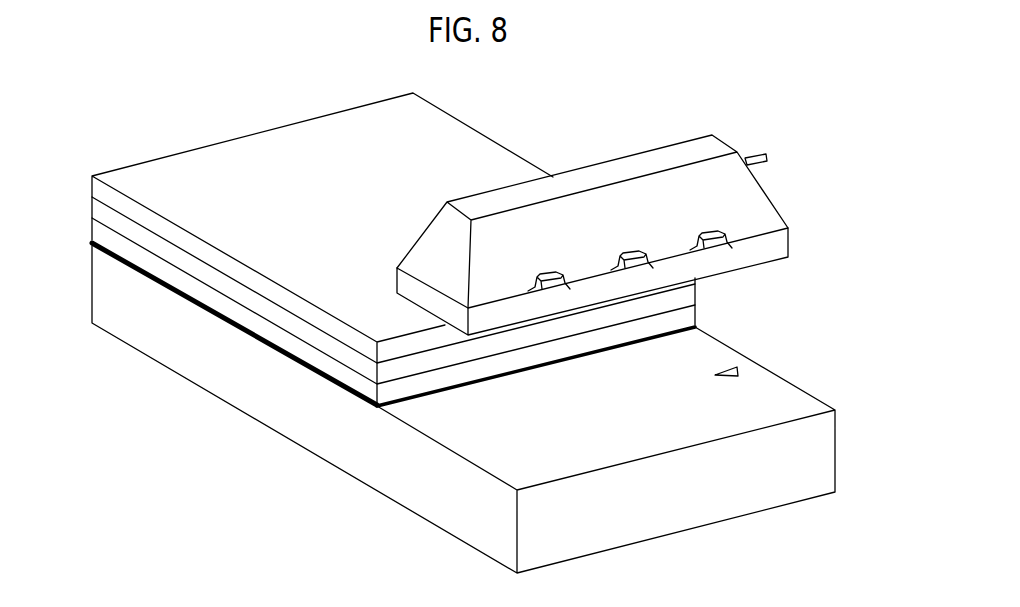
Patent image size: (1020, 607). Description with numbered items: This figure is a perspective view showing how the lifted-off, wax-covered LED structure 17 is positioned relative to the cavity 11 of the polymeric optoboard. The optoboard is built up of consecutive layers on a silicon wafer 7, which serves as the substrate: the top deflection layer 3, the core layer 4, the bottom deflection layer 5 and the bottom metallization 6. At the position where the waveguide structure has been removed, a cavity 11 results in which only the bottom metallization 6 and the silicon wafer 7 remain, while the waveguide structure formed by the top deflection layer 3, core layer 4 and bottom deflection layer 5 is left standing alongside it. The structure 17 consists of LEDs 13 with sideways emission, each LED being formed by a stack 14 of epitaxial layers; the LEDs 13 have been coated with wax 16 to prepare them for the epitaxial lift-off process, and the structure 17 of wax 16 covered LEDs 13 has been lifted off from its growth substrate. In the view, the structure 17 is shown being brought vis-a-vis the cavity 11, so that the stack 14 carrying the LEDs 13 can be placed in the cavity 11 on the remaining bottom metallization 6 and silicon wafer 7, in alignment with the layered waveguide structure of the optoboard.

The top deflection layer 3 is at (107, 193).
The core layer 4 is at (100, 212).
The bottom deflection layer 5 is at (120, 247).
The bottom metallization 6 is at (143, 270).
The silicon wafer 7 is at (820, 452).
The cavity 11 is at (737, 371).
The LEDs 13 is at (560, 291).
The stack 14 is at (775, 242).
The wax 16 is at (745, 189).
The structure 17 is at (767, 157).